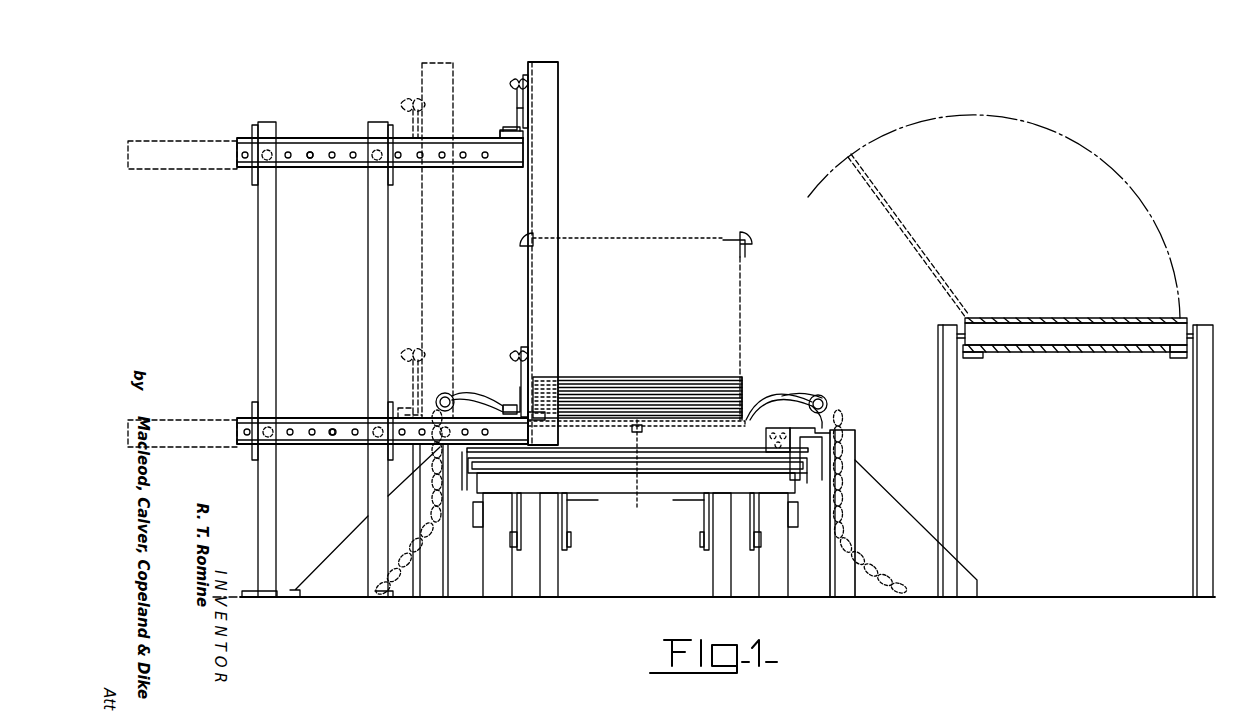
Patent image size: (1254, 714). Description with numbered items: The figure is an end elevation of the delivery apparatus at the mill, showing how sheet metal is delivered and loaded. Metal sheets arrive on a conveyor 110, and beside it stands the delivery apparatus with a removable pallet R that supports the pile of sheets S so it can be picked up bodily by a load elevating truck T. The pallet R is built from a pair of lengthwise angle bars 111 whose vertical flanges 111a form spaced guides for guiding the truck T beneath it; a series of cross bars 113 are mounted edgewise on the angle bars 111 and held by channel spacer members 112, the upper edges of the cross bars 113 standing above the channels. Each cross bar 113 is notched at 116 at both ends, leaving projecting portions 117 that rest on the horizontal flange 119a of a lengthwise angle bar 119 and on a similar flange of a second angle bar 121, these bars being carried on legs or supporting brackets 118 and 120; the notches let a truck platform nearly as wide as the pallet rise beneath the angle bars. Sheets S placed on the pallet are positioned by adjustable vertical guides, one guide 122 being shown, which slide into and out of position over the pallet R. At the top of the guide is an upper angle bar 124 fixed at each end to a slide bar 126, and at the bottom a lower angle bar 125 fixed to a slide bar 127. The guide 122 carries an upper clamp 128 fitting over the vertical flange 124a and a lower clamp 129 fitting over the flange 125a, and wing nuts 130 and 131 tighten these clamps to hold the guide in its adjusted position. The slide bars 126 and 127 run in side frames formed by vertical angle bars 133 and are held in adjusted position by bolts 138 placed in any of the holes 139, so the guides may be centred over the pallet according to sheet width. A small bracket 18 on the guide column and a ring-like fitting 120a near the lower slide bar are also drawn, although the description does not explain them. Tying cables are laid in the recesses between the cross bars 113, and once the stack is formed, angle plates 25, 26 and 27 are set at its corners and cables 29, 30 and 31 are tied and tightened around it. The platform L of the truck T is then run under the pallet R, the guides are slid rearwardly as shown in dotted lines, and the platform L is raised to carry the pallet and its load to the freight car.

The bracket 18 is at (540, 240).
The angle plate 25 is at (748, 396).
The angle plate 26 is at (540, 427).
The angle plate 27 is at (743, 232).
The cable 29 is at (772, 406).
The cable 30 is at (822, 398).
The cable 31 is at (850, 525).
The conveyor 110 is at (1048, 346).
The angle bar 111 is at (460, 463).
The vertical flange 111a is at (470, 467).
The channel spacer member 112 is at (650, 471).
The cross bar 113 is at (700, 418).
The notch 116 is at (789, 428).
The projecting portion 117 is at (490, 408).
The supporting bracket 118 is at (838, 592).
The angle bar 119 is at (826, 442).
The horizontal flange 119a is at (826, 432).
The supporting bracket 120 is at (439, 594).
The ring 120a is at (447, 393).
The angle bar 121 is at (442, 472).
The vertical guide 122 is at (555, 192).
The upper angle bar 124 is at (508, 166).
The vertical flange 124a is at (528, 119).
The lower angle bar 125 is at (519, 390).
The flange 125a is at (533, 395).
The slide bar 126 is at (300, 140).
The slide bar 127 is at (302, 418).
The clamp 128 is at (517, 110).
The clamp 129 is at (520, 370).
The wing nut 130 is at (518, 80).
The wing nut 131 is at (518, 352).
The vertical angle bar 133 is at (262, 262).
The bolt 138 is at (255, 172).
The hole 139 is at (332, 160).
The sheets S is at (743, 312).
The truck platform L is at (616, 480).
The truck T is at (562, 516).
The pallet R is at (722, 440).